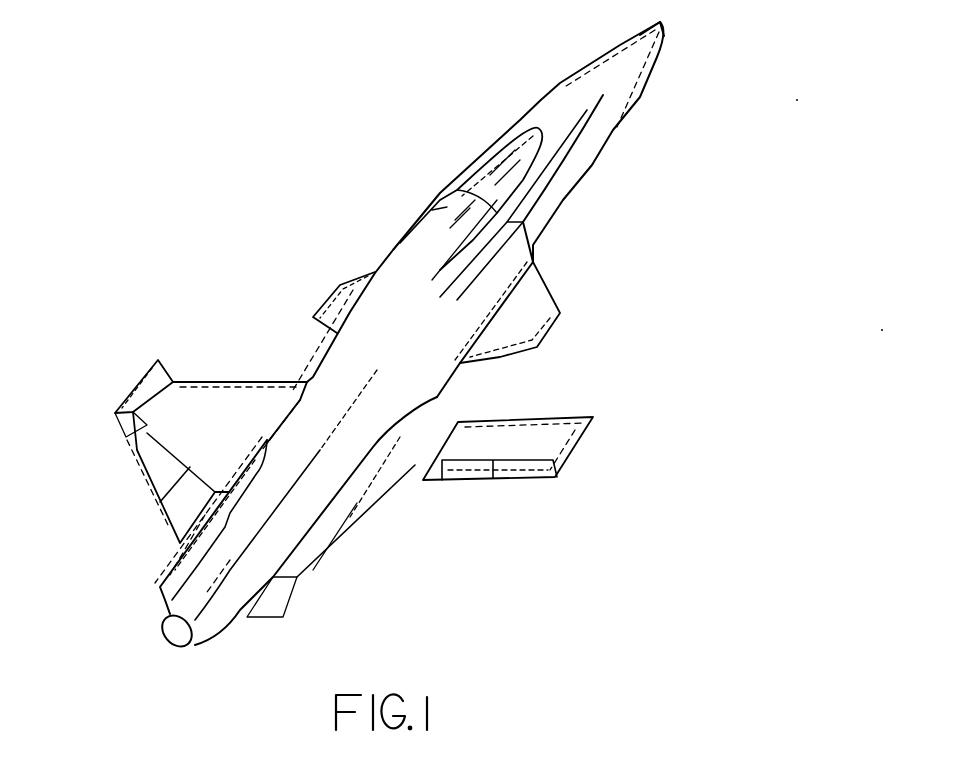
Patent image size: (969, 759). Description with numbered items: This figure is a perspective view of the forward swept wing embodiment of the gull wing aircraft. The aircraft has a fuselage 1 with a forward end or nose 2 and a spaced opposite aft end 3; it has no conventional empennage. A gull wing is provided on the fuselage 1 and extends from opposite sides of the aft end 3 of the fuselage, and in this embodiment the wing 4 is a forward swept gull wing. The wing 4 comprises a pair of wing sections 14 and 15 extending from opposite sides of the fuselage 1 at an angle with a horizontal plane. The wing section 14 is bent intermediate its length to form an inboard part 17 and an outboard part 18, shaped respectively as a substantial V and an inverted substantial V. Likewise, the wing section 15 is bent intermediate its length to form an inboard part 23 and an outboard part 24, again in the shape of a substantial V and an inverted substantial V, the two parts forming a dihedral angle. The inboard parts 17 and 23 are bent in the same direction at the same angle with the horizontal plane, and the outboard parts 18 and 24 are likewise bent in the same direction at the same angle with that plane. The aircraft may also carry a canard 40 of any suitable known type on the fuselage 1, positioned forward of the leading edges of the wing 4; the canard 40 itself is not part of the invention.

The fuselage 1 is at (425, 383).
The nose 2 is at (651, 32).
The aft end 3 is at (167, 608).
The forward swept gull wing 4 is at (197, 395).
The wing section 14 is at (383, 485).
The wing section 15 is at (197, 447).
The inboard part 17 is at (363, 497).
The outboard part 18 is at (590, 415).
The inboard part 23 is at (248, 390).
The outboard part 24 is at (185, 372).
The canard 40 is at (540, 303).